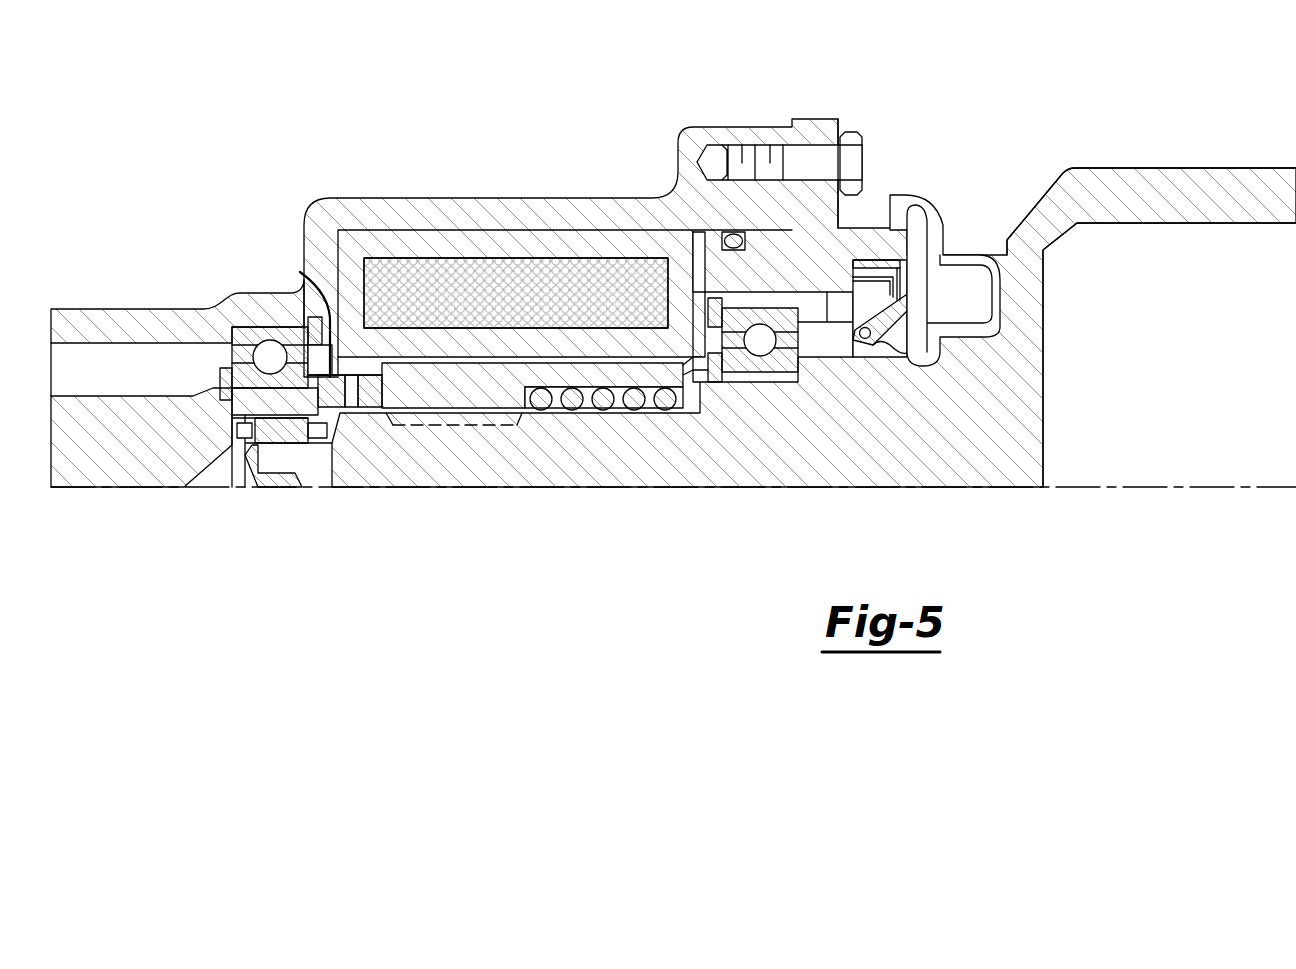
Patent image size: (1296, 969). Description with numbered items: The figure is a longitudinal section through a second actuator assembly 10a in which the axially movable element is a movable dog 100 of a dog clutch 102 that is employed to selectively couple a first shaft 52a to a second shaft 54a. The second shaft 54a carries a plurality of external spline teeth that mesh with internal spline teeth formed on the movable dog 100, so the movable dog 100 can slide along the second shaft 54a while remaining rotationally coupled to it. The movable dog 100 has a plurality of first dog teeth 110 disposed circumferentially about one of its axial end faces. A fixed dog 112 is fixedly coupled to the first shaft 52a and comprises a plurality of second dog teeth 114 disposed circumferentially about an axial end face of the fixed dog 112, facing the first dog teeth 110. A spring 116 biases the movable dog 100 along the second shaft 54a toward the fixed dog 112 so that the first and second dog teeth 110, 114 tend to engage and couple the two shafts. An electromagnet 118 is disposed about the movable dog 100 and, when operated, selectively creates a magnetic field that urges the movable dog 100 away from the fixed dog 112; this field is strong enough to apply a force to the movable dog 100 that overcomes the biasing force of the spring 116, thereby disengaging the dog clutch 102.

The second actuator assembly 10a is at (304, 103).
The first shaft 52a is at (88, 460).
The second shaft 54a is at (783, 465).
The movable dog 100 is at (532, 454).
The dog clutch 102 is at (323, 473).
The first dog teeth 110 is at (372, 392).
The fixed dog 112 is at (273, 407).
The second dog teeth 114 is at (300, 272).
The spring 116 is at (632, 400).
The electromagnet 118 is at (475, 272).